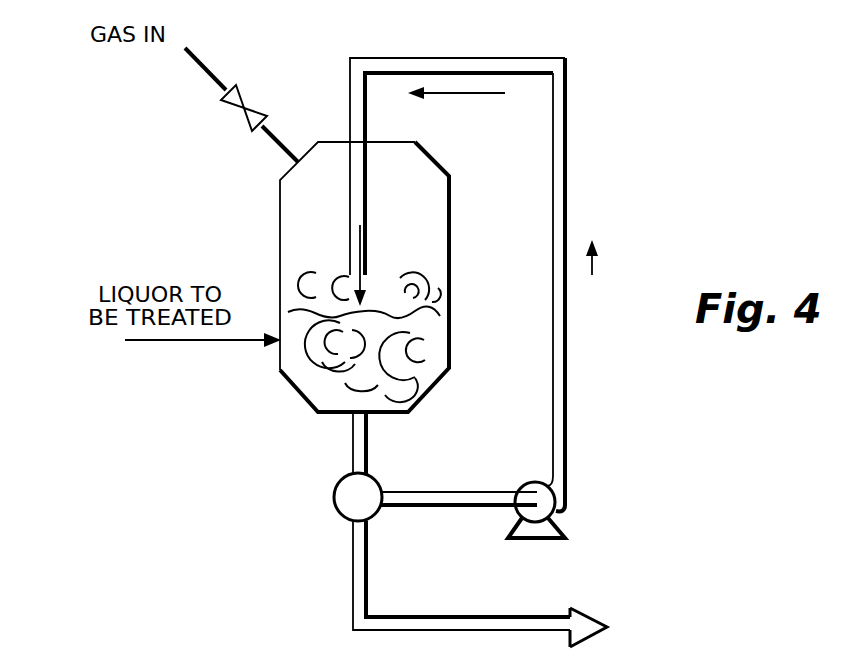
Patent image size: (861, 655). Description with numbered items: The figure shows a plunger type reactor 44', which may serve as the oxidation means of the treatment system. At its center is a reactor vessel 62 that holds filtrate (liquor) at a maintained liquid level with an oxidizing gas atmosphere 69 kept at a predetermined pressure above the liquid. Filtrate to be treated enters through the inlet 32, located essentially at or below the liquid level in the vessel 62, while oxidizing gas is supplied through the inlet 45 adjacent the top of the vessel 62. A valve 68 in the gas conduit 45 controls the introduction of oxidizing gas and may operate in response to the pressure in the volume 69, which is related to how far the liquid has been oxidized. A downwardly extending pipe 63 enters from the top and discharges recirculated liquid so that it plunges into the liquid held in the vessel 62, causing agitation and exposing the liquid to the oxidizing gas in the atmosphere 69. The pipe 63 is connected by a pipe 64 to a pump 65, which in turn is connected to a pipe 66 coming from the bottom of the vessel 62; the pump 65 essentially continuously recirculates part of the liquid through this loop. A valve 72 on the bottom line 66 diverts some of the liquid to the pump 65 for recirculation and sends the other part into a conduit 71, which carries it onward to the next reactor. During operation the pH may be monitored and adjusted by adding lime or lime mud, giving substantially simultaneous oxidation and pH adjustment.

The plunger type reactor 44' is at (373, 342).
The inlet for oxidizing gas 45 is at (222, 77).
The valve 68 is at (254, 95).
The atmosphere 69 is at (294, 182).
The downwardly extending pipe 63 is at (368, 187).
The pipe 64 is at (568, 212).
The reactor vessel 62 is at (280, 246).
The inlet for filtrate to be treated 32 is at (234, 341).
The pipe 66 is at (368, 461).
The valve 72 is at (340, 514).
The pump 65 is at (492, 518).
The conduit 71 is at (353, 582).